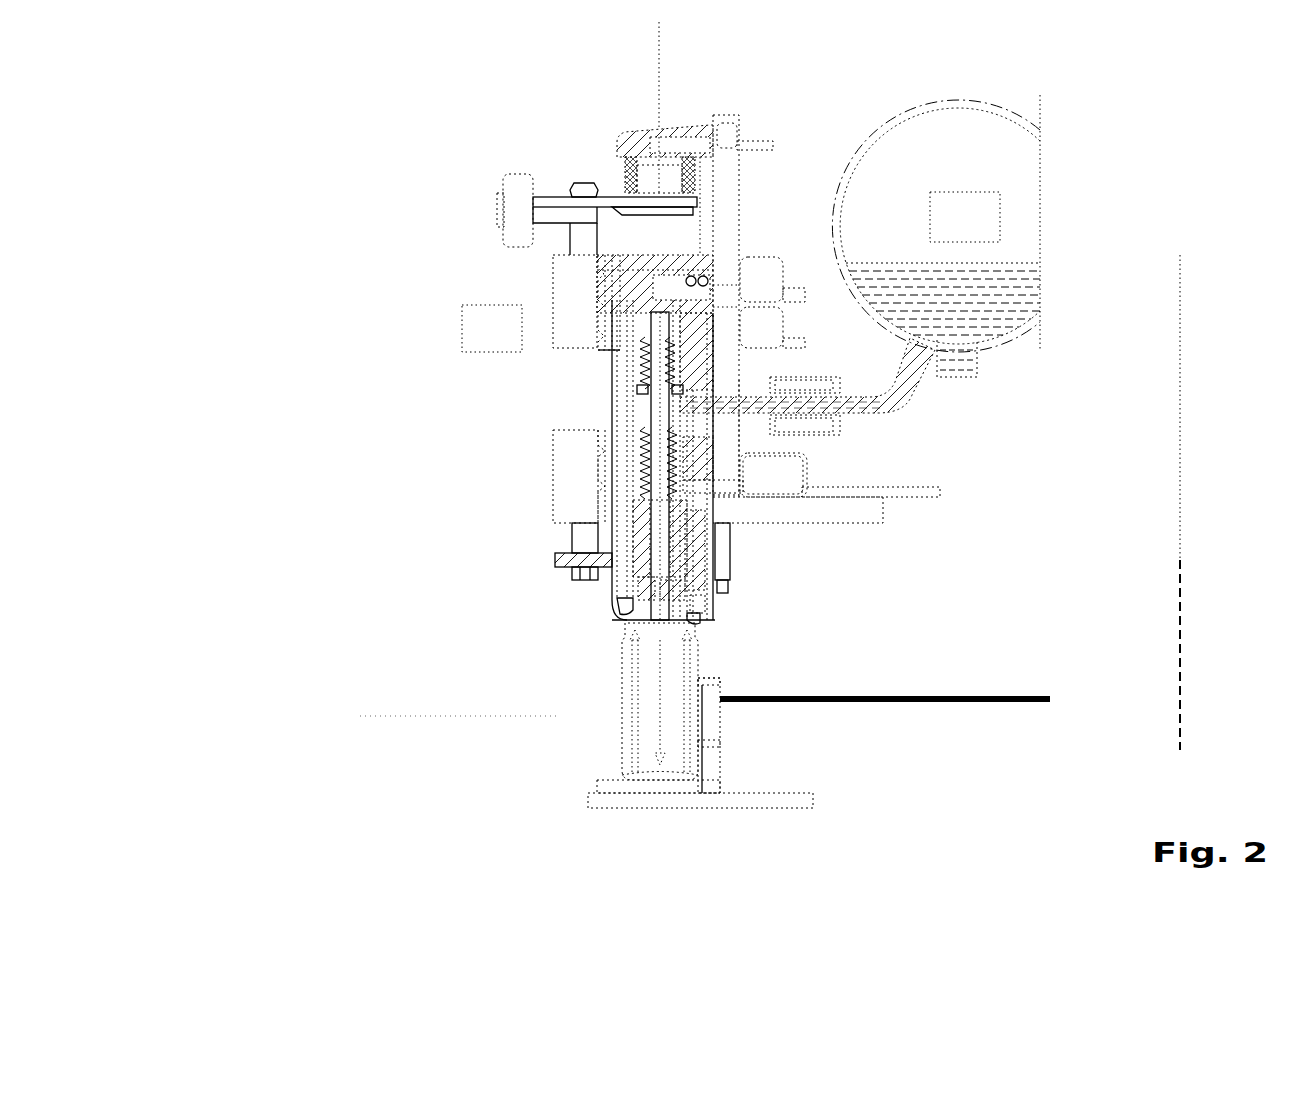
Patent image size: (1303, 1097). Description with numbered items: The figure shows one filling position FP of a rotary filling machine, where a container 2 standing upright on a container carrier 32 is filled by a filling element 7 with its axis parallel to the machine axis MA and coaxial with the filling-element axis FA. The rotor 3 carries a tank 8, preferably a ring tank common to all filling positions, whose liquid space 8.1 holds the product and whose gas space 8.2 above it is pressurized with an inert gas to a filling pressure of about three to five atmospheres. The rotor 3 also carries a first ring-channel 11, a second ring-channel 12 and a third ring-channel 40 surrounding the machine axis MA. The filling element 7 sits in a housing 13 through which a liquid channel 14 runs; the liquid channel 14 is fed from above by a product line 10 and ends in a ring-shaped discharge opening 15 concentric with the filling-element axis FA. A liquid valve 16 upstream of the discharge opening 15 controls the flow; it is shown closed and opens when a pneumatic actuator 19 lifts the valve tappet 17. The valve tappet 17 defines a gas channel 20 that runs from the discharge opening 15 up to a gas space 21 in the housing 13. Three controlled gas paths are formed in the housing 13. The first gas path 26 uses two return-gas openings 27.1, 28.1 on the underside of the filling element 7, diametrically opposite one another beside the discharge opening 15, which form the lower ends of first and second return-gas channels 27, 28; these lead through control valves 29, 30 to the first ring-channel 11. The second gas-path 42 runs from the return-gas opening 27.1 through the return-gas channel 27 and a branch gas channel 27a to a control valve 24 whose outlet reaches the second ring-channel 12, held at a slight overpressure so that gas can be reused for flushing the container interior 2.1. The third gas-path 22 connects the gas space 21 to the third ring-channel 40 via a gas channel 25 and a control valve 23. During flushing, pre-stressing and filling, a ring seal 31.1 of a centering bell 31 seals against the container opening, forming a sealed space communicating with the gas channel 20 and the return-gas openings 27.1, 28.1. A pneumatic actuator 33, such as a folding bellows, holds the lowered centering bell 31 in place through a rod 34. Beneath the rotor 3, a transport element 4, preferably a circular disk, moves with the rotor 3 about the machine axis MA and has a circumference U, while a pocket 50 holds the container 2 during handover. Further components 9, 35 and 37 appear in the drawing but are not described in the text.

The container 2 is at (658, 672).
The container interior 2.1 is at (668, 700).
The rotor 3 is at (862, 512).
The transport element 4 is at (982, 700).
The filling element 7 is at (296, 169).
The tank 8 is at (1052, 149).
The liquid space 8.1 is at (943, 316).
The gas space 8.2 is at (965, 217).
The connection block 9 is at (838, 418).
The product line 10 is at (905, 385).
The first ring-channel 11 is at (797, 468).
The second ring-channel 12 is at (775, 327).
The housing 13 is at (700, 377).
The liquid channel 14 is at (643, 508).
The discharge opening 15 is at (650, 613).
The liquid valve 16 is at (705, 592).
The valve tappet 17 is at (647, 437).
The pneumatic actuator 19 is at (625, 370).
The gas channel 20 is at (662, 520).
The gas space 21 is at (660, 315).
The third gas-path 22 is at (573, 293).
The control valve 23 is at (578, 210).
The control valve 24 is at (597, 324).
The gas channel 25 is at (625, 280).
The first gas path 26 is at (575, 493).
The first return-gas channel 27 is at (630, 530).
The gas channel 27a is at (633, 398).
The return gas opening 27.1 is at (628, 602).
The second return-gas channel 28 is at (693, 552).
The return gas opening 28.1 is at (692, 603).
The control valve 29 is at (598, 460).
The control valve 30 is at (600, 487).
The centering bell 31 is at (608, 580).
The ring seal 31.1 is at (700, 621).
The container carrier 32 is at (638, 798).
The pneumatic actuator 33 is at (662, 180).
The rod 34 is at (606, 279).
The adjusting knob 35 is at (513, 222).
The container wall flow 37 is at (660, 718).
The third ring-channel 40 is at (767, 273).
The second gas-path 42 is at (634, 378).
The pocket 50 is at (722, 756).
The filling-element axis FA is at (639, 75).
The machine axis MA is at (1183, 487).
The filling position FP is at (355, 715).
The circumference U is at (724, 707).